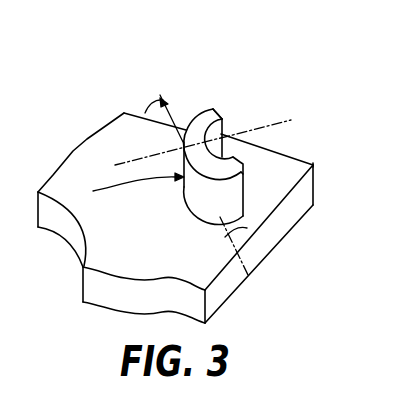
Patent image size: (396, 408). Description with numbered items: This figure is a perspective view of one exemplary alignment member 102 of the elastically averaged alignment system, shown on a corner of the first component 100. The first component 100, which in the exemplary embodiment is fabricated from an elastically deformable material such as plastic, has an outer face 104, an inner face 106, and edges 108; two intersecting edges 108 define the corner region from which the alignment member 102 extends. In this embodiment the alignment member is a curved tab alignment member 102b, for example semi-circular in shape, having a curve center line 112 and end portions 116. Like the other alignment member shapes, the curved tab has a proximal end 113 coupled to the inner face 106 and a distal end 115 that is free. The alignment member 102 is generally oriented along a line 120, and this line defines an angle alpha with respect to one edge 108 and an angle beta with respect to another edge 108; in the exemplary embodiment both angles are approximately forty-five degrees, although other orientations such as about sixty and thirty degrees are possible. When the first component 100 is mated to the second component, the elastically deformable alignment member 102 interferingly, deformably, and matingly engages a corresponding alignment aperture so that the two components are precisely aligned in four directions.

The first component 100 is at (206, 300).
The elastically deformable alignment member 102 is at (225, 106).
The curved tab alignment member 102b is at (182, 212).
The outer face 104 is at (220, 310).
The inner face 106 is at (202, 266).
The edge 108 is at (147, 118).
The curve center line 112 is at (291, 120).
The proximal end 113 is at (122, 188).
The distal end 115 is at (313, 164).
The end portion 116 is at (223, 116).
The line 120 is at (166, 108).